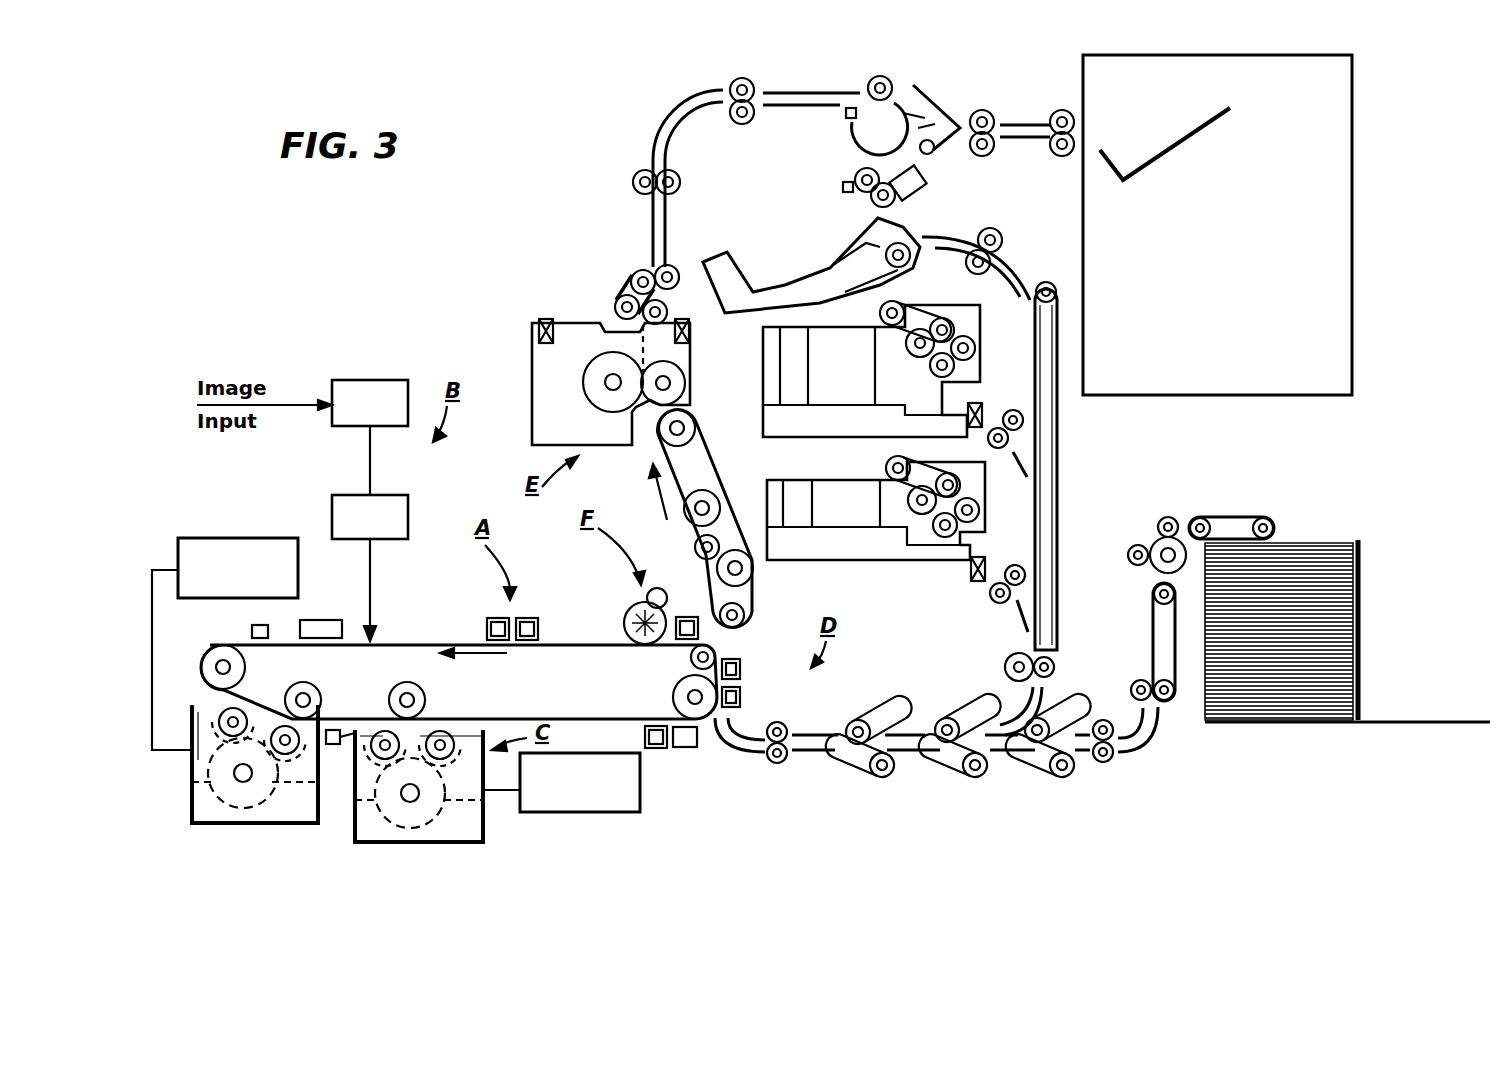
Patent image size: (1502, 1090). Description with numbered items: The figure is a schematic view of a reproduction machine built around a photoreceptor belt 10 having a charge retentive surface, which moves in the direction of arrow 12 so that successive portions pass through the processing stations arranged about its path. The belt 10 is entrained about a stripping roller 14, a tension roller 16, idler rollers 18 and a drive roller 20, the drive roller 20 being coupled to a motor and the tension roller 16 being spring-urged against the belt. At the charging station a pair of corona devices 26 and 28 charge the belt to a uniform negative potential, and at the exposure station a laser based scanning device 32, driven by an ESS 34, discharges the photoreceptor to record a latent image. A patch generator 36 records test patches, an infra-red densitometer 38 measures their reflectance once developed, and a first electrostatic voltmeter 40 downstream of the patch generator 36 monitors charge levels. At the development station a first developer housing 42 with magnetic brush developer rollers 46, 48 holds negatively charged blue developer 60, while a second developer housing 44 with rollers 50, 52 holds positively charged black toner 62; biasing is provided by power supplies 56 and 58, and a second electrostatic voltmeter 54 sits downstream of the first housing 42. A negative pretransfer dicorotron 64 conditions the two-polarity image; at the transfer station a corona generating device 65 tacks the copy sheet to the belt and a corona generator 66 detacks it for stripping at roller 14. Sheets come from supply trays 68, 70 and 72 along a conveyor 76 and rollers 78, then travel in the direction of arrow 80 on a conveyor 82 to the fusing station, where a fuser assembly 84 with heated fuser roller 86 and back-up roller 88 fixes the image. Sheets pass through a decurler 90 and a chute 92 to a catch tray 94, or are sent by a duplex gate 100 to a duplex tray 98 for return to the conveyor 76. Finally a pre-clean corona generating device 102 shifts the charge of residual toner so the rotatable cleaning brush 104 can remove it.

The photoreceptor belt 10 is at (410, 645).
The arrow 12 is at (470, 657).
The stripping roller 14 is at (692, 655).
The tension roller 16 is at (245, 667).
The idler rollers 18 is at (380, 693).
The drive roller 20 is at (676, 690).
The corona device 26 is at (497, 617).
The corona device 28 is at (531, 617).
The laser based scanning device (ROS) 32 is at (385, 495).
The ESS 34 is at (376, 380).
The patch generator 36 is at (310, 618).
The infra-red densitometer (IRD) 38 is at (693, 748).
The first electrostatic voltmeter (ESV1) 40 is at (250, 631).
The first developer housing 42 is at (190, 765).
The second developer housing 44 is at (483, 832).
The magnetic brush developer roller 46 is at (222, 712).
The magnetic brush developer roller 48 is at (283, 722).
The magnetic brush developer roller 50 is at (386, 728).
The magnetic brush developer roller 52 is at (448, 722).
The second electrostatic voltmeter (ESV2) 54 is at (337, 746).
The power supply 56 is at (250, 538).
The power supply 58 is at (612, 815).
The blue conductive magnetic brush developer 60 is at (212, 823).
The black toner 62 is at (373, 836).
The pretransfer dicorotron 64 is at (655, 749).
The corona generating device 65 is at (742, 693).
The corona generator 66 is at (742, 676).
The supply tray 68 is at (830, 440).
The supply tray 70 is at (872, 562).
The supply tray 72 is at (1275, 725).
The conveyor 76 is at (810, 752).
The rollers 78 is at (948, 798).
The arrow 80 is at (658, 498).
The conveyor 82 is at (720, 476).
The fuser assembly 84 is at (602, 415).
The heated fuser roller 86 is at (586, 376).
The back-up roller 88 is at (685, 384).
The decurler 90 is at (628, 284).
The chute 92 is at (683, 127).
The catch tray 94 is at (1158, 155).
The duplex tray 98 is at (783, 280).
The duplex gate 100 is at (937, 137).
The pre-clean corona generating device 102 is at (686, 616).
The cleaning member 104 is at (633, 604).